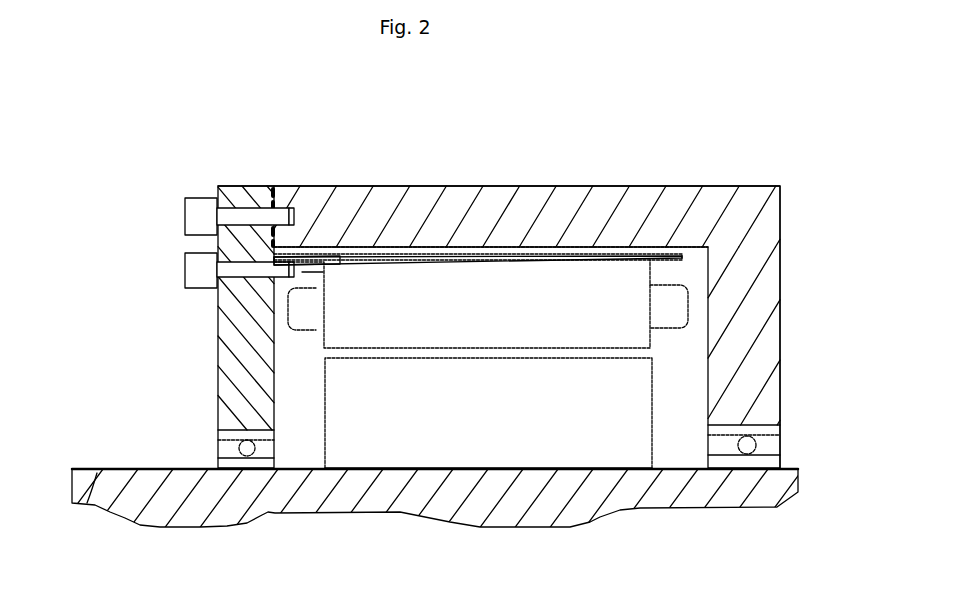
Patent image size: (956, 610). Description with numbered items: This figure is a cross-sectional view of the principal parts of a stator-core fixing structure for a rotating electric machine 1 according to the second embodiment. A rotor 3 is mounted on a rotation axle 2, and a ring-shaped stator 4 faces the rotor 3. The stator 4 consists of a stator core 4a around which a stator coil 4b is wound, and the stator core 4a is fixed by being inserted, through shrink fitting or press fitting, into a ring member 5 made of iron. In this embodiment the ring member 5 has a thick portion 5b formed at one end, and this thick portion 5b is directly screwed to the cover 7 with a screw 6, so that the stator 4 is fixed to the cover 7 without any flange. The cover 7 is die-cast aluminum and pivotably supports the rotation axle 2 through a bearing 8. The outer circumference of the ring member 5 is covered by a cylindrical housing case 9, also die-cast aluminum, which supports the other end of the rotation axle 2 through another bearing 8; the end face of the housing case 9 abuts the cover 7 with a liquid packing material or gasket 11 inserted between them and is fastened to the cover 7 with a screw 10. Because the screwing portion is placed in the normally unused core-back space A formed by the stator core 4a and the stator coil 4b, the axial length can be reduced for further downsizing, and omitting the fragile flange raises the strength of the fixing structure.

The rotating electric machine 1 is at (482, 168).
The rotation axle 2 is at (593, 493).
The rotor 3 is at (430, 447).
The stator 4 is at (517, 290).
The stator core 4a is at (362, 361).
The stator coil 4b is at (310, 323).
The ring member 5 is at (630, 257).
The thick portion 5b is at (325, 270).
The screw 6 is at (200, 277).
The cover 7 is at (242, 377).
The bearing 8 is at (225, 447).
The housing case 9 is at (737, 218).
The screw 10 is at (185, 199).
The gasket 11 is at (276, 192).
The space (core back) A is at (313, 273).